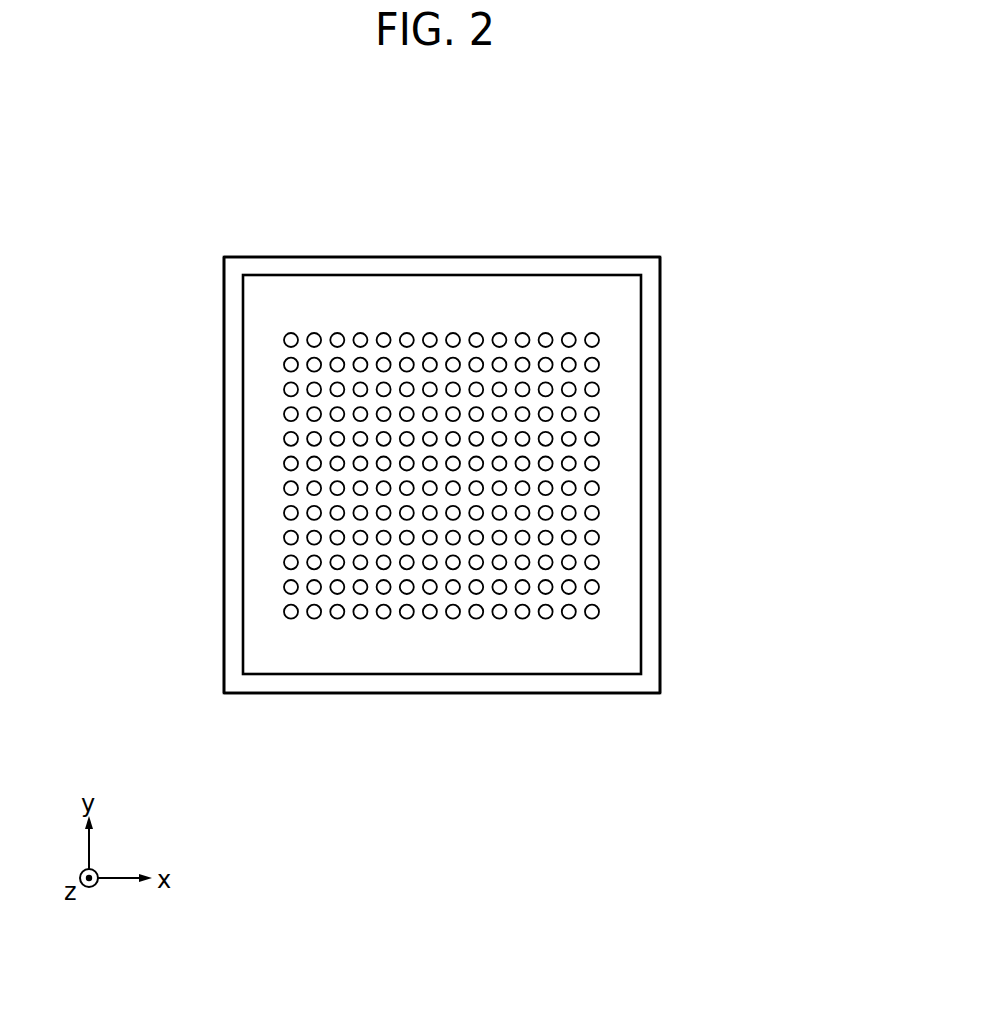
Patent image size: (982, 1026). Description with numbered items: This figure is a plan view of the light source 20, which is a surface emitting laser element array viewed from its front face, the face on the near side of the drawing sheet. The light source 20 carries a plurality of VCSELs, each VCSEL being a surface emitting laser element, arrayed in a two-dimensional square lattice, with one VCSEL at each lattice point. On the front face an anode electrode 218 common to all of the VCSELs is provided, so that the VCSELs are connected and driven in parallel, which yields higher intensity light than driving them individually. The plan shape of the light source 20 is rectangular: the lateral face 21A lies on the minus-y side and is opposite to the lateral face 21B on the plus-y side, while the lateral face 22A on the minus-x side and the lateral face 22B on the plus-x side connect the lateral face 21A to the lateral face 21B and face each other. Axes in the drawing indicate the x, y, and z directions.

The light source 20 is at (665, 291).
The anode electrode 218 is at (460, 655).
The lateral face 21A is at (377, 694).
The lateral face 21B is at (378, 257).
The lateral face 22A is at (224, 423).
The lateral face 22B is at (661, 512).
The element VCSEL is at (546, 333).